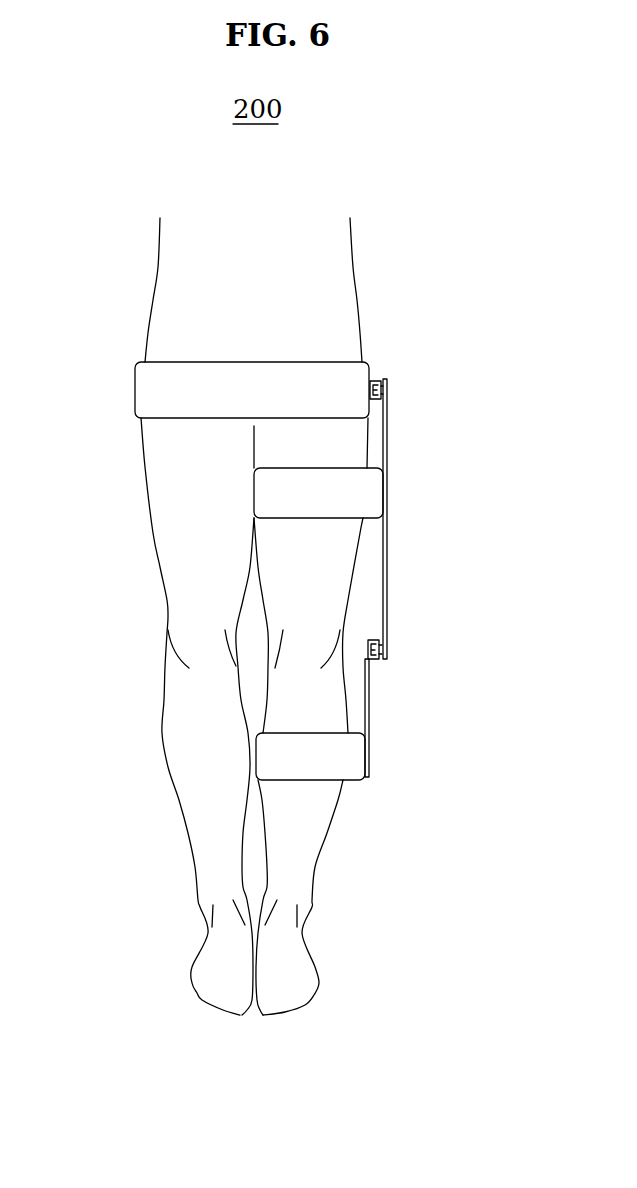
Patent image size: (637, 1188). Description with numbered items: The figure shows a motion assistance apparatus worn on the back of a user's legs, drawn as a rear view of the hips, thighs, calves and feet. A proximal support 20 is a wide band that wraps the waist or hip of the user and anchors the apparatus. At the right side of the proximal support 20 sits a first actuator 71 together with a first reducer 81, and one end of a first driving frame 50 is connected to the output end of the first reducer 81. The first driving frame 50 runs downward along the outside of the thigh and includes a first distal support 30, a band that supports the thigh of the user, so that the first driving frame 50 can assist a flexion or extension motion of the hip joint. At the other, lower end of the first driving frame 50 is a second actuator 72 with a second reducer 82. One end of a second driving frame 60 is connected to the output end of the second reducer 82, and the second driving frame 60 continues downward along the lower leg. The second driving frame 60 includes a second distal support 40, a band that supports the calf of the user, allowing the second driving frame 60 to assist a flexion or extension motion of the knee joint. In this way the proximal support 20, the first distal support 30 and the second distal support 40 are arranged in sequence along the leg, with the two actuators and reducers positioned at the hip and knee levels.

The proximal support 20 is at (143, 388).
The first distal support 30 is at (370, 495).
The second distal support 40 is at (360, 754).
The first driving frame 50 is at (386, 446).
The second driving frame 60 is at (372, 707).
The first actuator 71 is at (377, 379).
The second actuator 72 is at (380, 643).
The first reducer 81 is at (385, 390).
The second reducer 82 is at (382, 659).